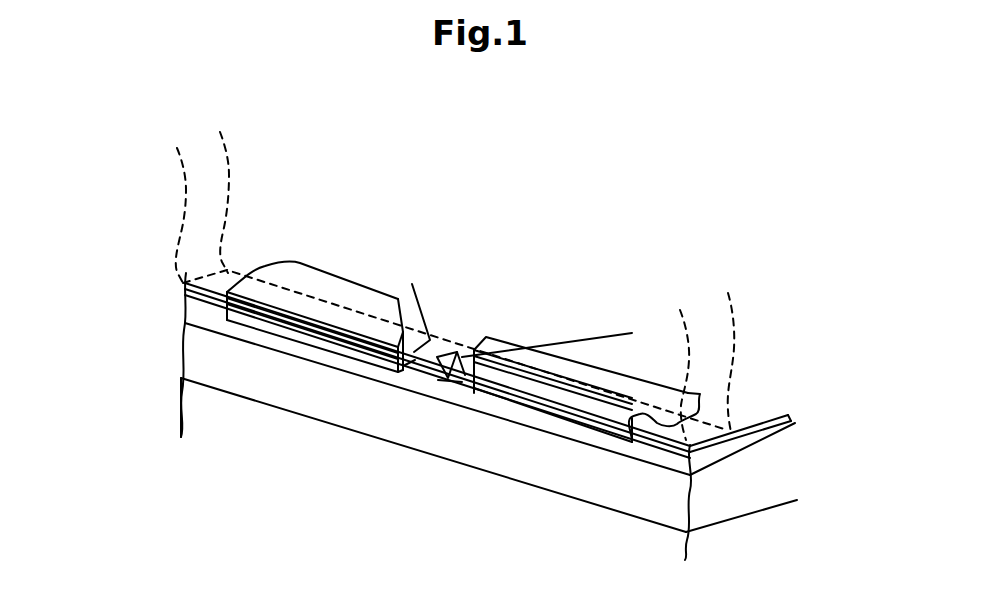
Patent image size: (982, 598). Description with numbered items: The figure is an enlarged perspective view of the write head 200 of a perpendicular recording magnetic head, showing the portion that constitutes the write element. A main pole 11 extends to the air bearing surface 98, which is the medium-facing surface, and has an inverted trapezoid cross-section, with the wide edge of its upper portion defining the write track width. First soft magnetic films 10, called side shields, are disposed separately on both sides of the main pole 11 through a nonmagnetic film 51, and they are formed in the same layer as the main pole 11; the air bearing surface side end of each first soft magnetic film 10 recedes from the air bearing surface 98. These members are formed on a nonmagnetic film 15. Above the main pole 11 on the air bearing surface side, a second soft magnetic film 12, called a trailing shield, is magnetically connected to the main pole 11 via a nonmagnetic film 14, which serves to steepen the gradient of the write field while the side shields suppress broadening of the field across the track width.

The write head 200 is at (148, 163).
The second soft magnetic film 12 is at (198, 178).
The first soft magnetic film 10 is at (312, 279).
The nonmagnetic film 51 is at (196, 307).
The air bearing surface 98 is at (196, 397).
The main pole 11 is at (397, 390).
The nonmagnetic film 14 is at (773, 427).
The nonmagnetic film 15 is at (716, 499).